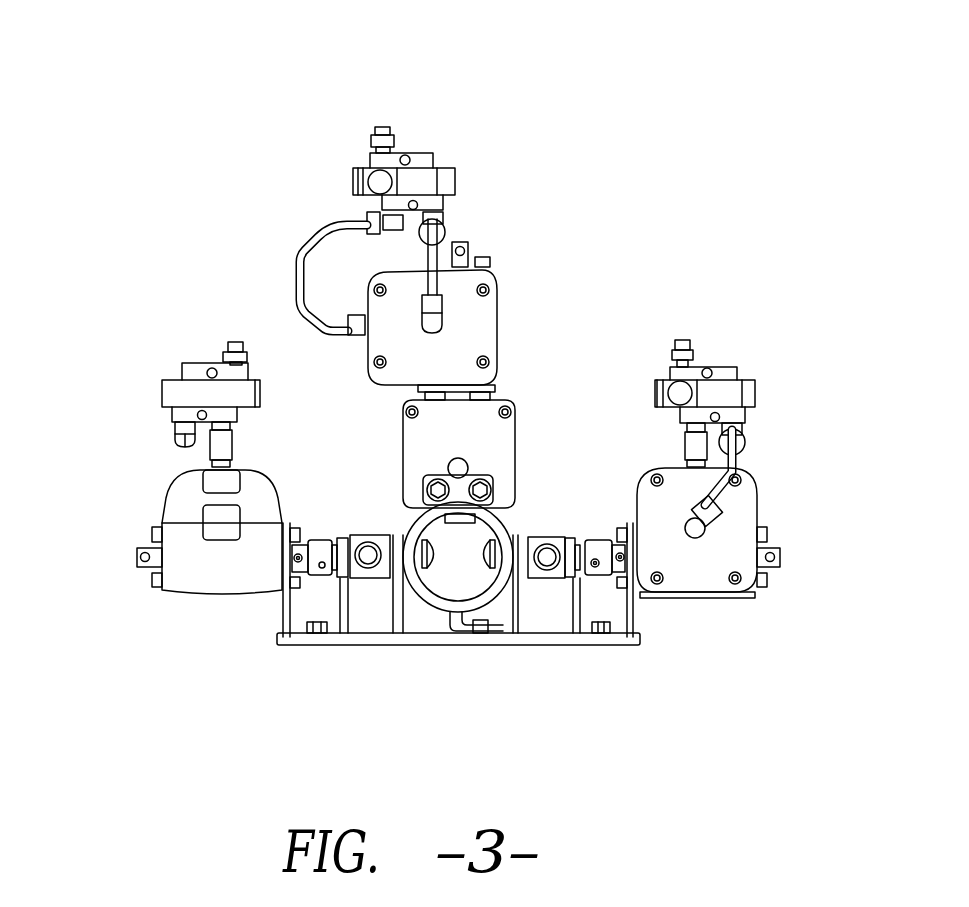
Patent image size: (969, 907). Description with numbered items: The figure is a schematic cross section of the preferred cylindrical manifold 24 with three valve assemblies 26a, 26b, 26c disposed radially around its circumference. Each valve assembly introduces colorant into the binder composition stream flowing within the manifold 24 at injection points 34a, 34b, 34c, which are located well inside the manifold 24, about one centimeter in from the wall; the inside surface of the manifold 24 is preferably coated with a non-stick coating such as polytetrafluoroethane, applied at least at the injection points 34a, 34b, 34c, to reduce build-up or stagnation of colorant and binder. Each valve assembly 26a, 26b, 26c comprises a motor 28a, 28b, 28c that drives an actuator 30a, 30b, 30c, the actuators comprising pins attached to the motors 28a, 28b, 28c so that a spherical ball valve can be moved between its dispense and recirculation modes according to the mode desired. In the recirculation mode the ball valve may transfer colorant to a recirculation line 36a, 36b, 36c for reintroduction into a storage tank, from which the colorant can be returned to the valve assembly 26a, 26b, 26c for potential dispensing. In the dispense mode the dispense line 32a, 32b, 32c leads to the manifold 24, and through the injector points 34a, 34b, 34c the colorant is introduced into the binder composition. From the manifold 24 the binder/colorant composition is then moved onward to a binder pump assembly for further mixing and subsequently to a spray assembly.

The manifold 24 is at (503, 528).
The valve assembly 26a is at (100, 387).
The valve assembly 26b is at (550, 68).
The valve assembly 26c is at (827, 392).
The motor 28a is at (187, 368).
The motor 28b is at (447, 167).
The motor 28c is at (715, 370).
The actuator 30a is at (233, 465).
The actuator 30b is at (440, 325).
The actuator 30c is at (700, 530).
The dispense line 32a is at (318, 545).
The dispense line 32b is at (515, 445).
The dispense line 32c is at (600, 545).
The injection point 34a is at (417, 560).
The injection point 34b is at (430, 525).
The injection point 34c is at (500, 560).
The recirculation line 36a is at (145, 567).
The recirculation line 36b is at (466, 252).
The recirculation line 36c is at (770, 567).